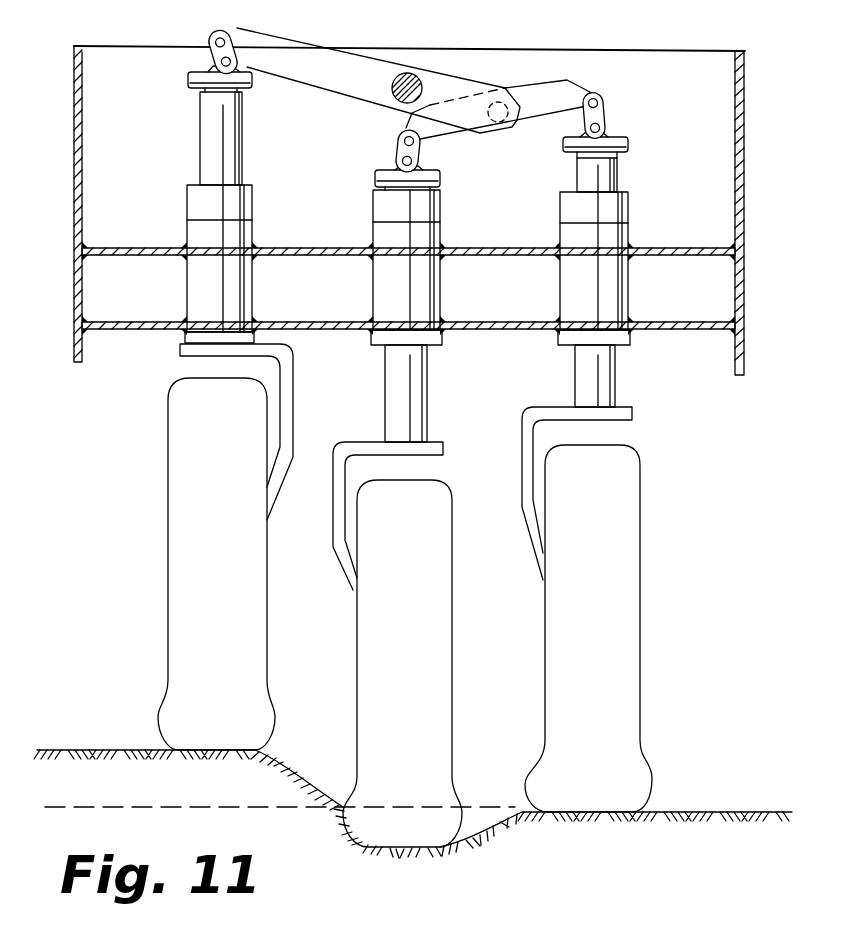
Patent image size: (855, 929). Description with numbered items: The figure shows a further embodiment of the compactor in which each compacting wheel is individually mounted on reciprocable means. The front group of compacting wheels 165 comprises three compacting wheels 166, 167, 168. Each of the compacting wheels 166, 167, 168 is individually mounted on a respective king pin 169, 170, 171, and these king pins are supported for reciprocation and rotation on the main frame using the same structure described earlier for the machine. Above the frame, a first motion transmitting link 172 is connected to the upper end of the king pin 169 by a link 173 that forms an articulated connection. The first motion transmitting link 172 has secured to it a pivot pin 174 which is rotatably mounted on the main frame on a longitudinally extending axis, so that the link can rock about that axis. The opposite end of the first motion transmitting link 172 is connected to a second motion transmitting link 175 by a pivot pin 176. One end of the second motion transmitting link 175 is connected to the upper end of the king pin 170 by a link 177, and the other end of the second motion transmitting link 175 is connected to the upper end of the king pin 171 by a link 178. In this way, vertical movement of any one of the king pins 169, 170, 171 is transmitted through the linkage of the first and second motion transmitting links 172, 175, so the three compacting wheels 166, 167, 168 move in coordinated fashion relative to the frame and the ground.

The front group of compacting wheels 165 is at (157, 547).
The compacting wheel 166 is at (185, 387).
The compacting wheel 167 is at (422, 495).
The compacting wheel 168 is at (617, 462).
The king pin 169 is at (212, 144).
The king pin 170 is at (417, 395).
The king pin 171 is at (605, 383).
The first motion transmitting link 172 is at (345, 95).
The link 173 is at (217, 44).
The pivot pin 174 is at (407, 77).
The second motion transmitting link 175 is at (548, 108).
The pivot pin 176 is at (503, 100).
The link 177 is at (413, 152).
The link 178 is at (600, 115).